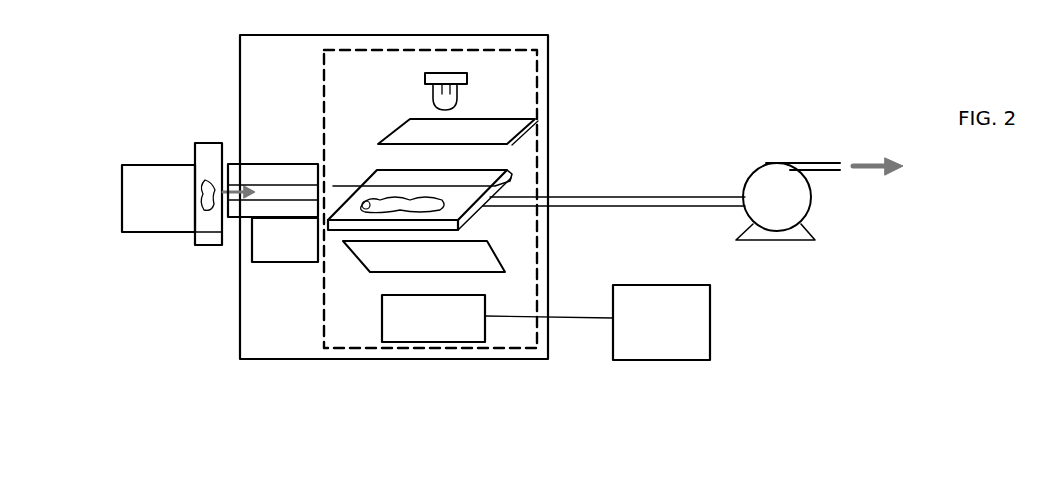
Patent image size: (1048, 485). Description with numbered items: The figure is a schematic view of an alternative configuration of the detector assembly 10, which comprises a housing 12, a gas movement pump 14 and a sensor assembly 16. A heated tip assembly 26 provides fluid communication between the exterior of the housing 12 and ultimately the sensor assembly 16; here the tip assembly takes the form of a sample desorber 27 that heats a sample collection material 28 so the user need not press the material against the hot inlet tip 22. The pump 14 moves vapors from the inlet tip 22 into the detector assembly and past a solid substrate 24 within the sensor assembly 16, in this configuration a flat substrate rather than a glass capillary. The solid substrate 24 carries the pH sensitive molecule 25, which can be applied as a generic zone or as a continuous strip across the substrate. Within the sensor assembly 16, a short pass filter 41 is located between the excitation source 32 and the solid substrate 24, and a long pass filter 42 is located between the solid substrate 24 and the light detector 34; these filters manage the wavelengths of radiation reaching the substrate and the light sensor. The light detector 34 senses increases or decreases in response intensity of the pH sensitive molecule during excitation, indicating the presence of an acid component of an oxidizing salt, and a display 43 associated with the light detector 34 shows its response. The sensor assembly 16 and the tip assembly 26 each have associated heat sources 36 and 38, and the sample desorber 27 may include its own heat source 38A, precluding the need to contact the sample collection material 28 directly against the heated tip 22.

The detector assembly 10 is at (711, 119).
The housing 12 is at (240, 52).
The gas movement pump 14 is at (783, 158).
The sensor assembly 16 is at (537, 57).
The inlet tip 22 is at (248, 210).
The solid substrate 24 is at (455, 212).
The pH sensitive molecule 25 is at (393, 186).
The heated tip assembly 26 is at (267, 150).
The sample desorber 27 is at (135, 197).
The sample collection material 28 is at (202, 150).
The excitation source 32 is at (448, 76).
The light detector 34 is at (448, 320).
The heat source 36 is at (488, 175).
The heat source 38 is at (277, 258).
The heat source 38A is at (193, 240).
The short pass filter 41 is at (480, 127).
The long pass filter 42 is at (460, 257).
The display 43 is at (688, 321).